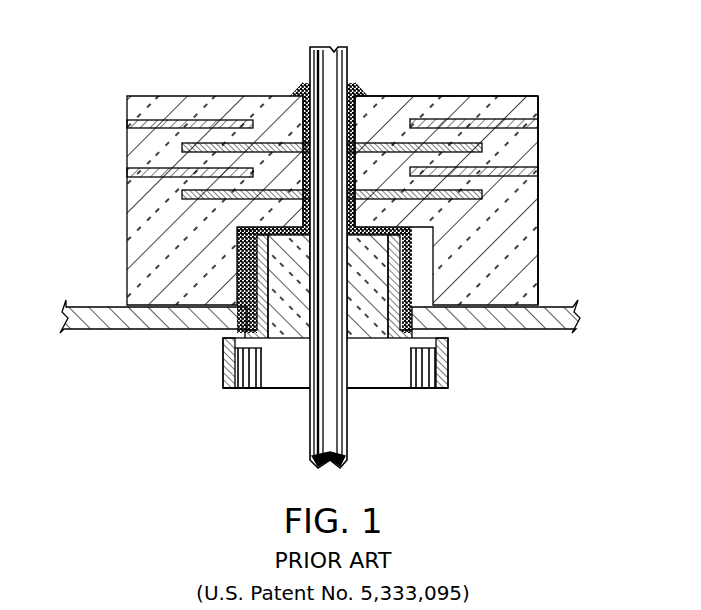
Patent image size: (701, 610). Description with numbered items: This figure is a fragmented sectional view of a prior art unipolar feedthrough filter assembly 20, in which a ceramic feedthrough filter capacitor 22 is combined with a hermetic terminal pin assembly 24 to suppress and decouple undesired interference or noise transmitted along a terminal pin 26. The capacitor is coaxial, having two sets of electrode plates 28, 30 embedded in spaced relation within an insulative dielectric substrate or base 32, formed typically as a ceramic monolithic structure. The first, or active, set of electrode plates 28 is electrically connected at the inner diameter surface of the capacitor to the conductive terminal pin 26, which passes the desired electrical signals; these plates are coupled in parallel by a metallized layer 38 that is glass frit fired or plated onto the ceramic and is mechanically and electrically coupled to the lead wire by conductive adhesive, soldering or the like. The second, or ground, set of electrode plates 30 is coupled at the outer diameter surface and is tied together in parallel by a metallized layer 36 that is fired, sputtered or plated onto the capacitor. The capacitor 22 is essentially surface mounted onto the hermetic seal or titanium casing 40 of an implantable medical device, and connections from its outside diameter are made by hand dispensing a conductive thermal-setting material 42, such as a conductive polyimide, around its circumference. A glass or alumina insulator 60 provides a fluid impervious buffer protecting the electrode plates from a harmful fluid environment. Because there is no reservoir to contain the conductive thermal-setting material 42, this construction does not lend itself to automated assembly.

The unipolar feedthrough filter assembly 20 is at (560, 88).
The ceramic feedthrough filter capacitor 22 is at (544, 216).
The hermetic terminal pin assembly 24 is at (293, 396).
The terminal pin 26 is at (348, 447).
The first set of electrode plates 28 is at (180, 153).
The second set of electrode plates 30 is at (538, 126).
The insulative dielectric substrate 32 is at (427, 103).
The metallized layer 36 is at (538, 248).
The metallized layer 38 is at (308, 163).
The titanium casing 40 is at (548, 331).
The conductive thermal-setting material 42 is at (354, 84).
The insulator 60 is at (447, 386).